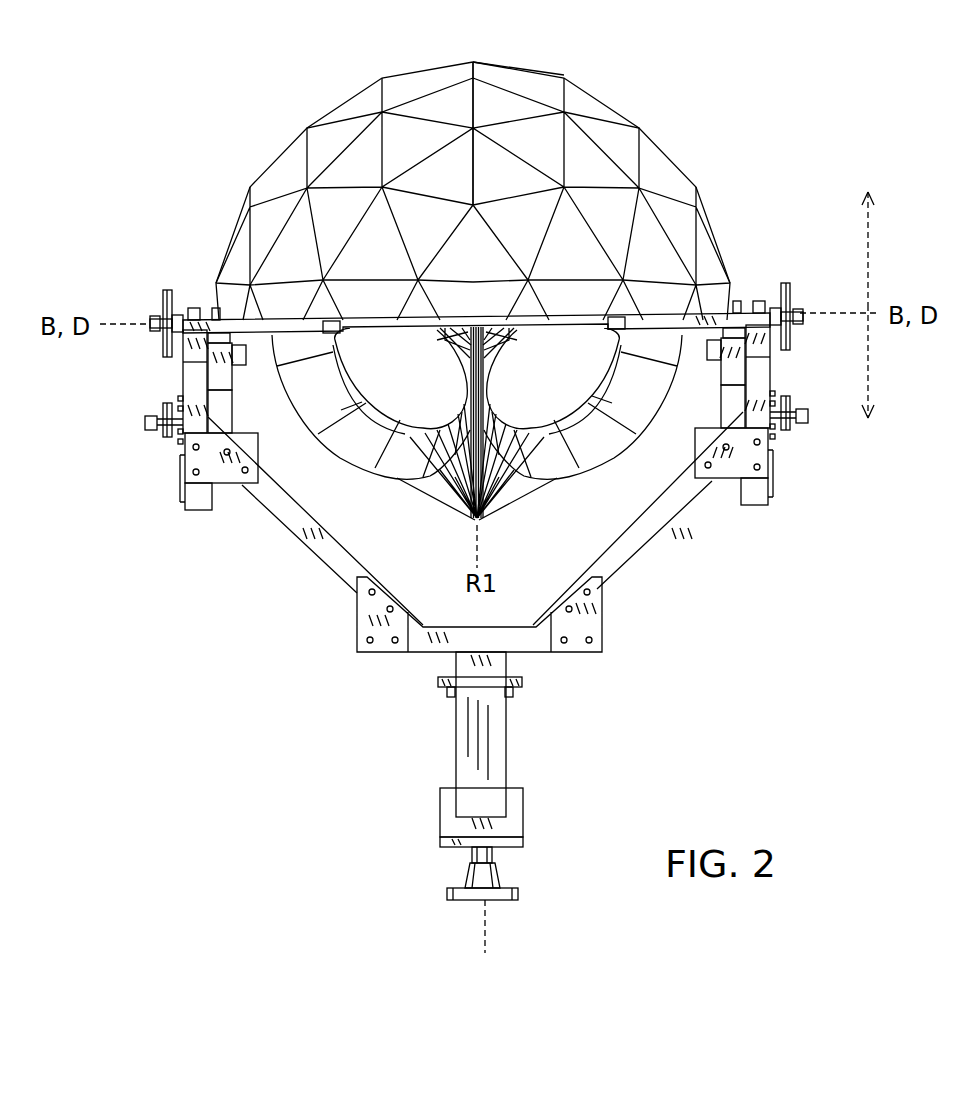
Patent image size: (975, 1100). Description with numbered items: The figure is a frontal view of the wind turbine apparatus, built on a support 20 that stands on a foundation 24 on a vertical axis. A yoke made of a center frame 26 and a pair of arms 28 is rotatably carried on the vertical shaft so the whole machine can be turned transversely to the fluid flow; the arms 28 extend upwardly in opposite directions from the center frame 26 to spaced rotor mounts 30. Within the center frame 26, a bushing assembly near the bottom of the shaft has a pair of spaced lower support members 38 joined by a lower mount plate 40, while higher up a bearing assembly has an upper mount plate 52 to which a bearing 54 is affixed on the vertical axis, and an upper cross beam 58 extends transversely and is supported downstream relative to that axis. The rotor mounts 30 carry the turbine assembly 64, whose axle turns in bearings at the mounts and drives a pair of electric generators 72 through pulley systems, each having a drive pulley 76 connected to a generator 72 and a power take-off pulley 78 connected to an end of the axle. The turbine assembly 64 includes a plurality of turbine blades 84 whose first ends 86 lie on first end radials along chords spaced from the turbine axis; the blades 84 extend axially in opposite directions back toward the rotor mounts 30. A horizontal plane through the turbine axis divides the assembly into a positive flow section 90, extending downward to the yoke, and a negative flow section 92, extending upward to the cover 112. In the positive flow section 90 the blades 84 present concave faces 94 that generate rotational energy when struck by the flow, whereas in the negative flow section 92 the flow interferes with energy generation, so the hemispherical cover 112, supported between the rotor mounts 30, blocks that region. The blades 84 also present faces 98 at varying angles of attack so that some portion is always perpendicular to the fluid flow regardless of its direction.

The support 20 is at (243, 678).
The foundation 24 is at (517, 887).
The center frame 26 is at (442, 754).
The arms 28 is at (293, 535).
The rotor mounts 30 is at (183, 356).
The lower support members 38 is at (525, 805).
The lower mount plate 40 is at (440, 840).
The upper mount plate 52 is at (513, 678).
The bearing 54 is at (508, 698).
The upper cross beam 58 is at (418, 653).
The turbine assembly 64 is at (473, 166).
The electric generators 72 is at (232, 428).
The drive pulley 76 is at (150, 430).
The power take-off pulley 78 is at (163, 292).
The turbine blades 84 is at (322, 435).
The first ends 86 is at (473, 518).
The positive flow section 90 is at (870, 379).
The negative flow section 92 is at (870, 230).
The concave faces 94 is at (350, 465).
The faces 98 is at (378, 475).
The cover 112 is at (528, 67).